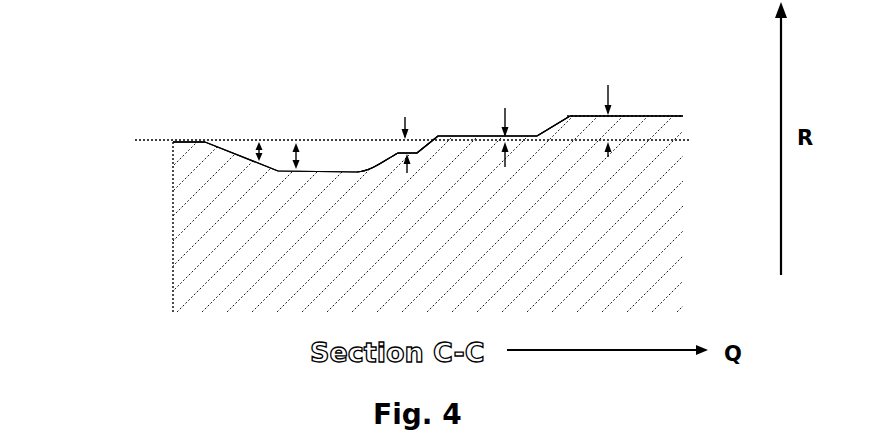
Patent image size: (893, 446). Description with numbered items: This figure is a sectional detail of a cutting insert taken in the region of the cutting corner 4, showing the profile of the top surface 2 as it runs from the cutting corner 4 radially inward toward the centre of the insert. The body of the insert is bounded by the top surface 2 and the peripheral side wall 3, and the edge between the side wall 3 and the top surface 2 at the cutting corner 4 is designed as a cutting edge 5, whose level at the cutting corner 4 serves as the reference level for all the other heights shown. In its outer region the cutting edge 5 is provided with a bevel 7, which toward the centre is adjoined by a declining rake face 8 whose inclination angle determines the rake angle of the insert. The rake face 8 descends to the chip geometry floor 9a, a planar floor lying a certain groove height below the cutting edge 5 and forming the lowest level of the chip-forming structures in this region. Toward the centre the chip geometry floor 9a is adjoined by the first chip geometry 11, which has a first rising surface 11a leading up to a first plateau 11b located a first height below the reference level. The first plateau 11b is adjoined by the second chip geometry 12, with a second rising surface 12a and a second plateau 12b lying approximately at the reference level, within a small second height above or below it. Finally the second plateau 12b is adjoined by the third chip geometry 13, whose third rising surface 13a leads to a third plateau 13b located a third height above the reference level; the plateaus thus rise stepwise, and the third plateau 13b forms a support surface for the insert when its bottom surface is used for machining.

The top surface 2 is at (240, 36).
The side wall 3 is at (173, 247).
The cutting corner 4 is at (173, 147).
The cutting edge 5 is at (160, 128).
The bevel 7 is at (193, 143).
The rake face 8 is at (268, 167).
The chip geometry floor 9a is at (319, 172).
The first chip geometry 11 is at (335, 15).
The first rising surface 11a is at (377, 158).
The first plateau 11b is at (418, 153).
The second chip geometry 12 is at (540, 12).
The second rising surface 12a is at (428, 145).
The second plateau 12b is at (478, 136).
The third chip geometry 13 is at (715, 48).
The third rising surface 13a is at (553, 125).
The third plateau 13b is at (622, 116).